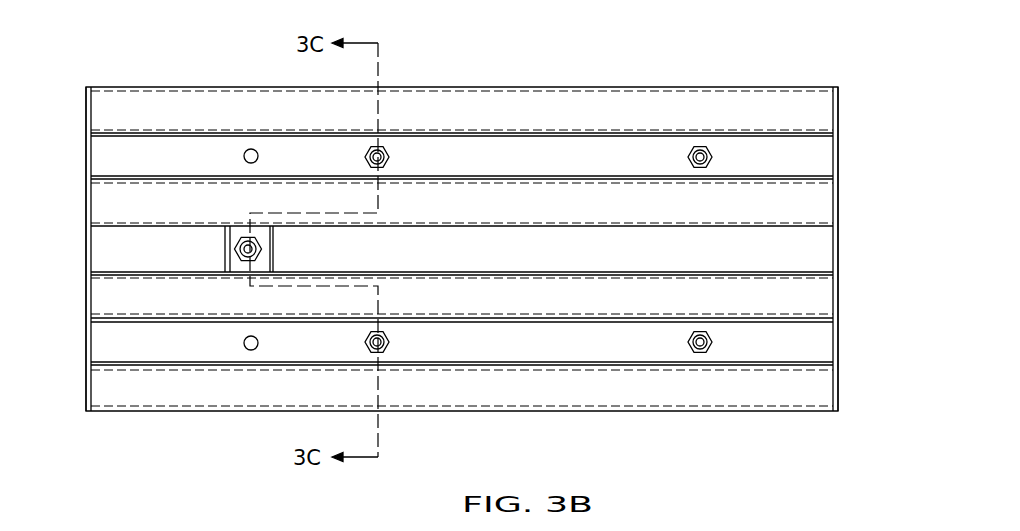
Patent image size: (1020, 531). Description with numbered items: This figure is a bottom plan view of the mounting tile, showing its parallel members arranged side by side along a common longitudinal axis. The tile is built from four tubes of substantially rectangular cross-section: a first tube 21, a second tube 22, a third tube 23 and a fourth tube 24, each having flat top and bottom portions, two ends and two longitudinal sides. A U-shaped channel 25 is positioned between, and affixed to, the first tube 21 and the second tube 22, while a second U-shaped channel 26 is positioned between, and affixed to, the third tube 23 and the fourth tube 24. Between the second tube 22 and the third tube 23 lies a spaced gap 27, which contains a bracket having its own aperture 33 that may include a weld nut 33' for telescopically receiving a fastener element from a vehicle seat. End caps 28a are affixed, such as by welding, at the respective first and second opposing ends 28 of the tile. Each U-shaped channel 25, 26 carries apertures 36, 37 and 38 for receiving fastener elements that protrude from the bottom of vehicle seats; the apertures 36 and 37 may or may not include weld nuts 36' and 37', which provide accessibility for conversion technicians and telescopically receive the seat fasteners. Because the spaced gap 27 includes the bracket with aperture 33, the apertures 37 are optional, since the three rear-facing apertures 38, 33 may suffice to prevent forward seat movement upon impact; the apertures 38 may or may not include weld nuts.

The first tube 21 is at (159, 107).
The second tube 22 is at (115, 209).
The third tube 23 is at (115, 300).
The fourth tube 24 is at (115, 392).
The U-shaped channel 25 is at (815, 162).
The U-shaped channel 26 is at (815, 348).
The spaced gap 27 is at (815, 253).
The opposing ends 28 is at (118, 103).
The end caps 28a is at (86, 108).
The aperture 33 is at (223, 157).
The weld nut 33' is at (247, 362).
The aperture 36 is at (676, 248).
The weld nut 36' is at (731, 249).
The aperture 37 is at (410, 241).
The weld nut 37' is at (440, 245).
The aperture 38 is at (249, 150).